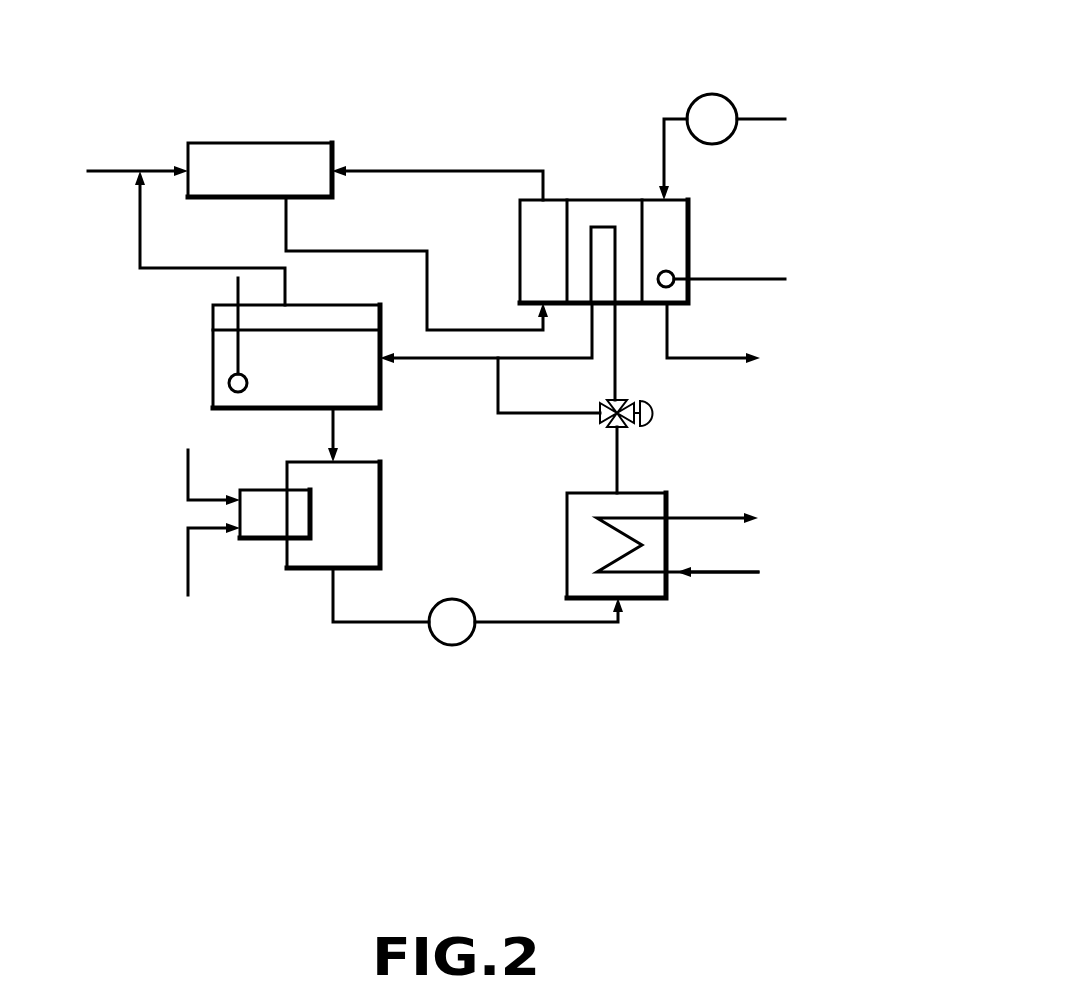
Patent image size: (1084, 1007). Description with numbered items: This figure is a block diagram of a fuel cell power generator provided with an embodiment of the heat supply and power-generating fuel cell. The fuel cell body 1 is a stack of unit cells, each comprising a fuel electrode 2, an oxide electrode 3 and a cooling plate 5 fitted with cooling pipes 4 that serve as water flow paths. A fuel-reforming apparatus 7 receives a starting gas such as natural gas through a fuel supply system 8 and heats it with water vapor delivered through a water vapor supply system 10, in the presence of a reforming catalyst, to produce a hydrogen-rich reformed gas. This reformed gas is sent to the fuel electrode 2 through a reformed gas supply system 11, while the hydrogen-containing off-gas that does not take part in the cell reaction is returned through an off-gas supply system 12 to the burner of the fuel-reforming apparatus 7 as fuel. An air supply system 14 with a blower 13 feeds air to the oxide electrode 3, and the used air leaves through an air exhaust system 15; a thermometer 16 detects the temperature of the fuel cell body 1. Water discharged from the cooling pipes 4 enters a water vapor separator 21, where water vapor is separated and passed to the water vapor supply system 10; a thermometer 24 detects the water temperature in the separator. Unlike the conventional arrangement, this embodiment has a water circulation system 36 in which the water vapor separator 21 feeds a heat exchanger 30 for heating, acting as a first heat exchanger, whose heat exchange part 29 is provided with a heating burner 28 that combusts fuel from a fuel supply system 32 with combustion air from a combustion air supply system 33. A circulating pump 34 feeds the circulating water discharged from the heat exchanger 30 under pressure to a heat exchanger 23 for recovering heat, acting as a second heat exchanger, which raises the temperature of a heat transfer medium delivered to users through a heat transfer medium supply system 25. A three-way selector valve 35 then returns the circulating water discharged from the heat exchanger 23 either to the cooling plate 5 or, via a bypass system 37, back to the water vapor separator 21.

The fuel cell body 1 is at (577, 190).
The fuel electrode 2 is at (527, 250).
The oxide electrode 3 is at (680, 238).
The cooling pipes 4 is at (620, 300).
The cooling plate 5 is at (624, 210).
The fuel-reforming apparatus 7 is at (270, 150).
The fuel supply system 8 is at (113, 170).
The water vapor supply system 10 is at (140, 220).
The reformed gas supply system 11 is at (378, 250).
The off-gas supply system 12 is at (410, 171).
The blower 13 is at (710, 93).
The air supply system 14 is at (762, 117).
The air exhaust system 15 is at (720, 360).
The thermometer 16 is at (755, 282).
The water vapor separator 21 is at (213, 360).
The heat exchanger for recovering heat 23 is at (652, 600).
The thermometer 24 is at (238, 292).
The heat transfer medium supply system 25 is at (735, 575).
The heating burner 28 is at (258, 540).
The heat exchange part 29 is at (372, 535).
The heat exchanger for heating 30 is at (392, 450).
The fuel supply system 32 is at (188, 562).
The combustion air supply system 33 is at (188, 475).
The circulating pump 34 is at (452, 645).
The three-way selector valve 35 is at (620, 428).
The water circulation system 36 is at (360, 625).
The bypass system 37 is at (548, 413).